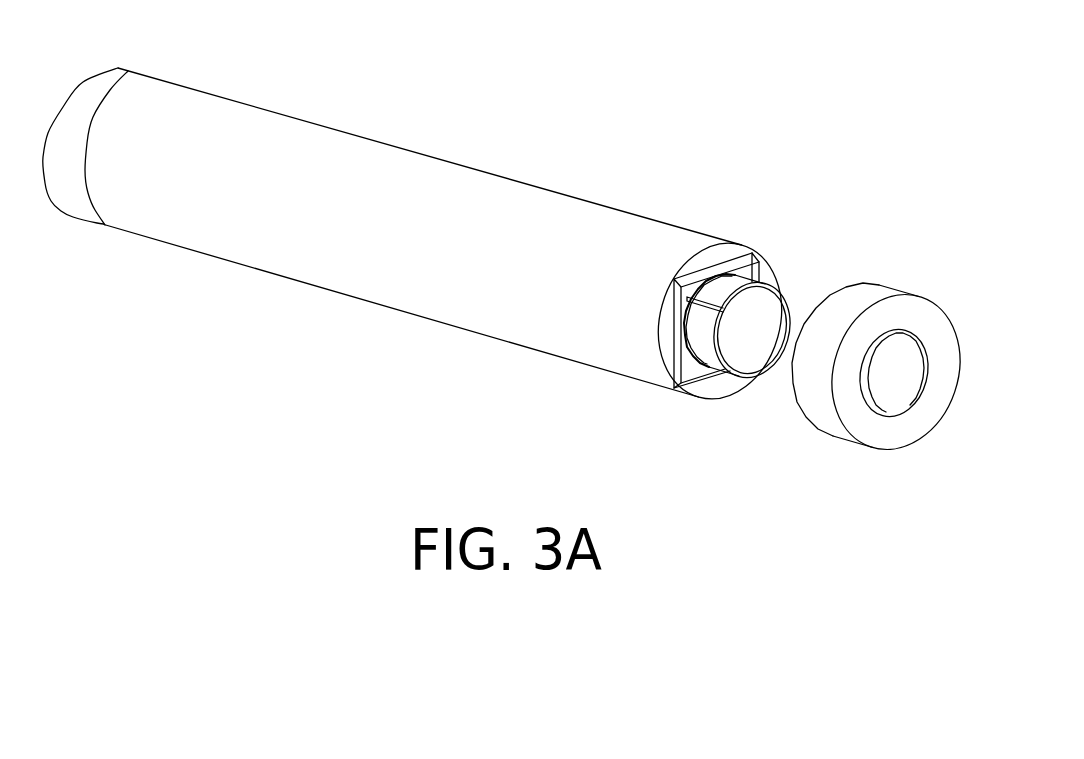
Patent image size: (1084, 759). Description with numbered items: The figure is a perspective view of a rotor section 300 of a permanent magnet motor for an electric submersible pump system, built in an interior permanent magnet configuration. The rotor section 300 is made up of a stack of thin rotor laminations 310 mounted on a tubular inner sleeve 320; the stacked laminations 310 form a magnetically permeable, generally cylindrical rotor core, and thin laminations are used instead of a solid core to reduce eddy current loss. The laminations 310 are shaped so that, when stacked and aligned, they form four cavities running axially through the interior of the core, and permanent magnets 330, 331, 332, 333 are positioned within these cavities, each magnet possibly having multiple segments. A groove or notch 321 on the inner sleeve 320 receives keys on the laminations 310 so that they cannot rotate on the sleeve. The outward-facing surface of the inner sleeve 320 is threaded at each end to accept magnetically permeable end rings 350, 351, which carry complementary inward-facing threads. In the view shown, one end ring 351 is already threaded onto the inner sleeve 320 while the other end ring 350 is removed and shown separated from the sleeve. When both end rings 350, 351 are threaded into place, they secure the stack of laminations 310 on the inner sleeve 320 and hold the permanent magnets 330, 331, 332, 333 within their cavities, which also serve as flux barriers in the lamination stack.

The rotor section 300 is at (454, 146).
The rotor laminations 310 is at (590, 202).
The end ring 351 is at (133, 72).
The tubular inner sleeve 320 is at (763, 373).
The groove or notch 321 is at (705, 310).
The permanent magnet 330 is at (700, 271).
The permanent magnet 331 is at (676, 325).
The permanent magnet 332 is at (700, 380).
The permanent magnet 333 is at (760, 276).
The end ring 350 is at (862, 294).